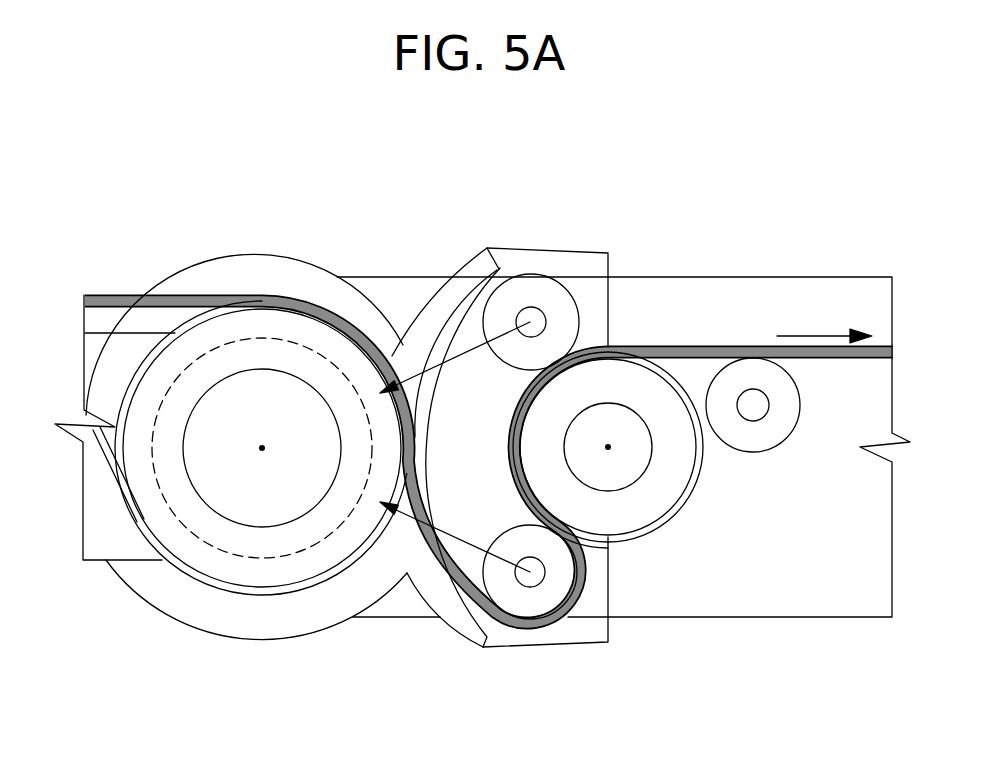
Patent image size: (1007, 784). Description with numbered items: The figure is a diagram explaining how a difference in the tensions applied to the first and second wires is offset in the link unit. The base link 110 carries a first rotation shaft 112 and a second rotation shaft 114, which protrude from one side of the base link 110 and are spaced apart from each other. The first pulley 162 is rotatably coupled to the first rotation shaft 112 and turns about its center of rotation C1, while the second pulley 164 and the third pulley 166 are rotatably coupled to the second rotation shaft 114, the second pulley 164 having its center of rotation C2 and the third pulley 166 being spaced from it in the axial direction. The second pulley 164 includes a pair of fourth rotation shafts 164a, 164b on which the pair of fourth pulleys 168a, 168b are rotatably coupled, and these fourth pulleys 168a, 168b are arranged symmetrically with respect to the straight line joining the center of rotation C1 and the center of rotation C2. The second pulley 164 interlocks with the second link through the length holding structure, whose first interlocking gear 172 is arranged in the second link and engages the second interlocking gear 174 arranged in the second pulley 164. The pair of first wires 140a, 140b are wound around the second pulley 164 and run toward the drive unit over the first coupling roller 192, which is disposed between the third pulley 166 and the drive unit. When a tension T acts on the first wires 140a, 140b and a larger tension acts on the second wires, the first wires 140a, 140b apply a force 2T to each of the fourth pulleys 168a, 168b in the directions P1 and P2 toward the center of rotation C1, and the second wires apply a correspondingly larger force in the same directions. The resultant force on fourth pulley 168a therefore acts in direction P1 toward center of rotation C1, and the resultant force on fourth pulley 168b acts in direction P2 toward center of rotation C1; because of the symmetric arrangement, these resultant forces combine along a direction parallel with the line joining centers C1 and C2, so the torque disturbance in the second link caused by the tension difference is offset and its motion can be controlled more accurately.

The base link 110 is at (832, 598).
The first rotation shaft 112 is at (243, 397).
The second rotation shaft 114 is at (630, 423).
The first wire 140a is at (123, 300).
The first wire 140b is at (157, 547).
The first pulley 162 is at (267, 572).
The second pulley 164 is at (587, 630).
The fourth rotation shaft 164a is at (530, 307).
The fourth rotation shaft 164b is at (532, 578).
The third pulley 166 is at (660, 493).
The fourth pulley 168a is at (493, 318).
The fourth pulley 168b is at (505, 593).
The first interlocking gear 172 is at (260, 337).
The second interlocking gear 174 is at (403, 343).
The first coupling roller 192 is at (780, 428).
The tension T is at (824, 327).
The force 2T is at (455, 447).
The direction P1 is at (462, 352).
The direction P2 is at (462, 542).
The center of rotation C1 is at (262, 463).
The center of rotation C2 is at (608, 462).